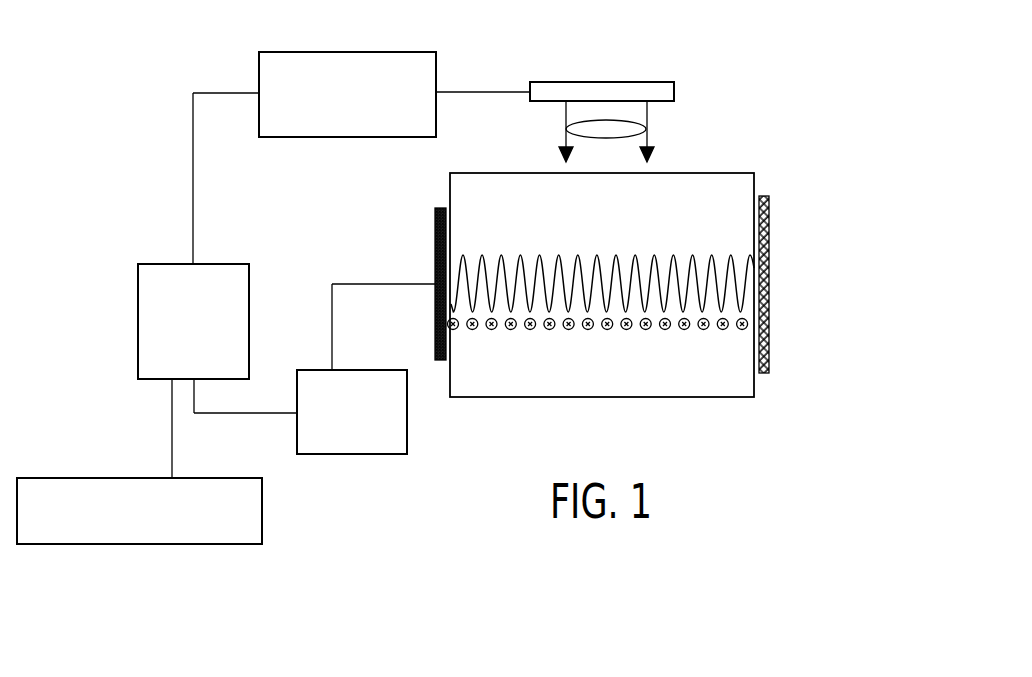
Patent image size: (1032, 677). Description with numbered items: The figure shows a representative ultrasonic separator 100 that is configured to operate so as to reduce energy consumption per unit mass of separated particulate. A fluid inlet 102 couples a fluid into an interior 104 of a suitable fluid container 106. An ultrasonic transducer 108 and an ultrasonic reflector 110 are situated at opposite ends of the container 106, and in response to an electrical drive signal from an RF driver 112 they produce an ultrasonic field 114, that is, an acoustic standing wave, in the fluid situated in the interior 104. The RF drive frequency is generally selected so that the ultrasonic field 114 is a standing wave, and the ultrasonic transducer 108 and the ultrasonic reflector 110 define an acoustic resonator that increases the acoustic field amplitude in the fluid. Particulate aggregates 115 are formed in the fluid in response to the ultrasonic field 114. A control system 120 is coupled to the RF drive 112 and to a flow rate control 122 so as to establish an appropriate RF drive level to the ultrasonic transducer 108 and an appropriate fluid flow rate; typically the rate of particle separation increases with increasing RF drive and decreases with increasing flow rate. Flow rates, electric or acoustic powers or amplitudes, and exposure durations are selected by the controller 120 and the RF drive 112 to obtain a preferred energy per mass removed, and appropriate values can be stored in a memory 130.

The ultrasonic separator 100 is at (848, 89).
The fluid inlet 102 is at (647, 127).
The interior 104 is at (718, 376).
The fluid container 106 is at (778, 173).
The ultrasonic transducer 108 is at (435, 243).
The ultrasonic reflector 110 is at (769, 232).
The RF driver 112 is at (368, 455).
The ultrasonic field 114 is at (500, 256).
The particulate aggregates 115 is at (550, 331).
The control system 120 is at (249, 264).
The flow rate control 122 is at (323, 52).
The memory 130 is at (70, 478).